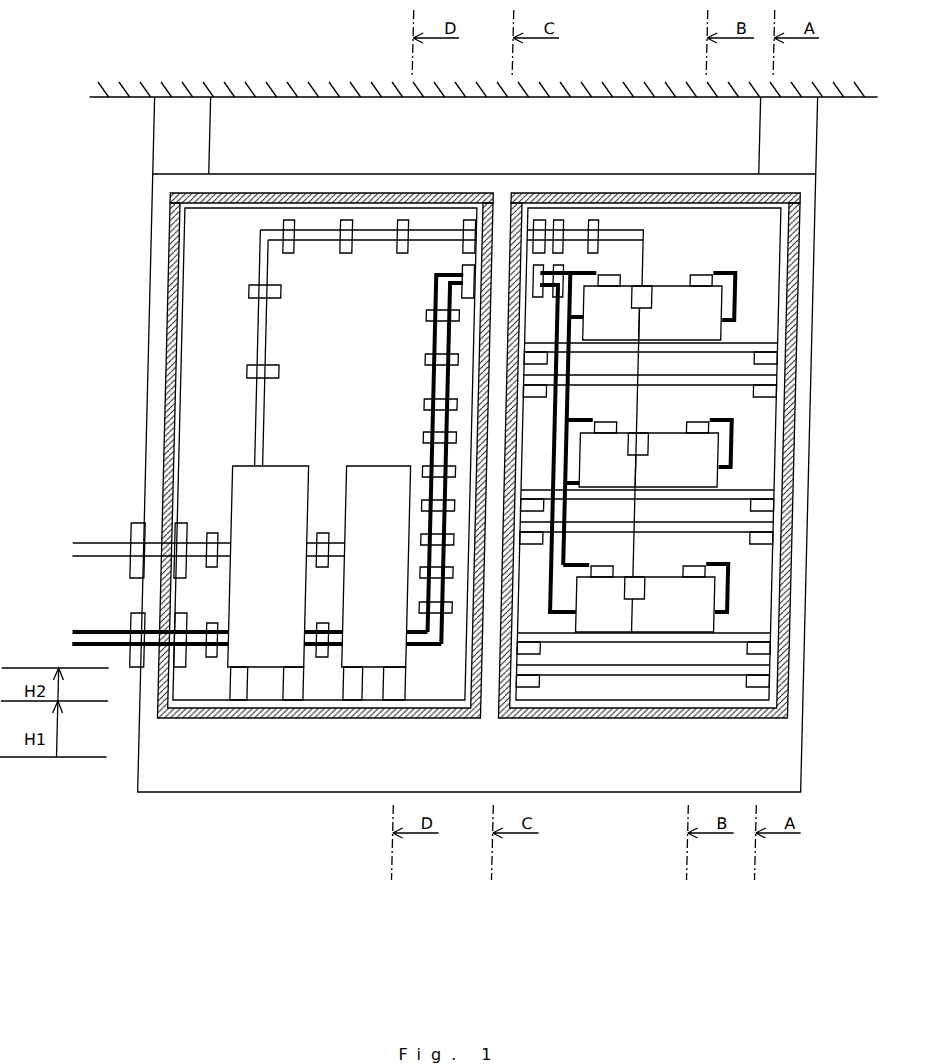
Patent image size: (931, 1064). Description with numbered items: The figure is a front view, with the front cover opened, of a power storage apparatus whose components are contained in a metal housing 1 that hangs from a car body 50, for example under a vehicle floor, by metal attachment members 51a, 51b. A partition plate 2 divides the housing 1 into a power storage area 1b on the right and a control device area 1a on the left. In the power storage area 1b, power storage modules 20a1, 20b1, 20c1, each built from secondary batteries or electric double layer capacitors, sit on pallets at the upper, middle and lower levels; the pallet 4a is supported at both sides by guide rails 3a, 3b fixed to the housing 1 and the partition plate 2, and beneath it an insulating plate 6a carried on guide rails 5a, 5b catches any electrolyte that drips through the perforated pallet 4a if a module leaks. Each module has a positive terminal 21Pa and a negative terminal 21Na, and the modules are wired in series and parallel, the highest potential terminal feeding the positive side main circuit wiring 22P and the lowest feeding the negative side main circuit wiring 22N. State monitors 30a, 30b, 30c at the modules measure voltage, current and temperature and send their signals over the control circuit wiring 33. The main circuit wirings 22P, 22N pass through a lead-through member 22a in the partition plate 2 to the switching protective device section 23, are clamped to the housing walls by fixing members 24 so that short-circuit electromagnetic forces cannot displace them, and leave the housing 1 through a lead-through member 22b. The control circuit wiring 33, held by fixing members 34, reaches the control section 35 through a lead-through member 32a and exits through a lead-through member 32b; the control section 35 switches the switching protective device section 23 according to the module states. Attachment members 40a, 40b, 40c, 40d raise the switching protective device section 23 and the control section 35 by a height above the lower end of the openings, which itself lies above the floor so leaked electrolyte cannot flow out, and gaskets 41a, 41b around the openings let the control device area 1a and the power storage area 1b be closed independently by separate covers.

The housing 1 is at (329, 174).
The control device area 1a is at (293, 415).
The power storage area 1b is at (650, 415).
The partition plate 2 is at (455, 390).
The guide rail 3a is at (790, 347).
The guide rail 3b is at (572, 360).
The pallet 4a is at (690, 484).
The guide rail 5a is at (790, 388).
The guide rail 5b is at (572, 394).
The insulating plate 6a is at (748, 380).
The power storage module 20a1 is at (671, 287).
The power storage module 20b1 is at (655, 439).
The power storage module 20c1 is at (652, 585).
The positive terminal 21Pa is at (627, 273).
The negative terminal 21Na is at (722, 273).
The lead-through member 22a is at (440, 272).
The lead-through member 22b is at (146, 618).
The positive side main circuit wiring 22P is at (88, 632).
The negative side main circuit wiring 22N is at (88, 644).
The switching protective device section 23 is at (400, 466).
The fixing member 24 is at (434, 316).
The state monitor 30a is at (656, 300).
The state monitor 30b is at (662, 447).
The state monitor 30c is at (662, 592).
The lead-through member 32a is at (462, 232).
The lead-through member 32b is at (144, 524).
The control circuit wiring 33 is at (266, 333).
The fixing member 34 is at (376, 254).
The control section 35 is at (300, 466).
The attachment member 40a is at (280, 700).
The attachment member 40b is at (324, 700).
The attachment member 40c is at (377, 700).
The attachment member 40d is at (414, 686).
The gasket 41a is at (241, 193).
The gasket 41b is at (537, 193).
The car body 50 is at (622, 95).
The attachment member 51a is at (216, 124).
The attachment member 51b is at (820, 131).